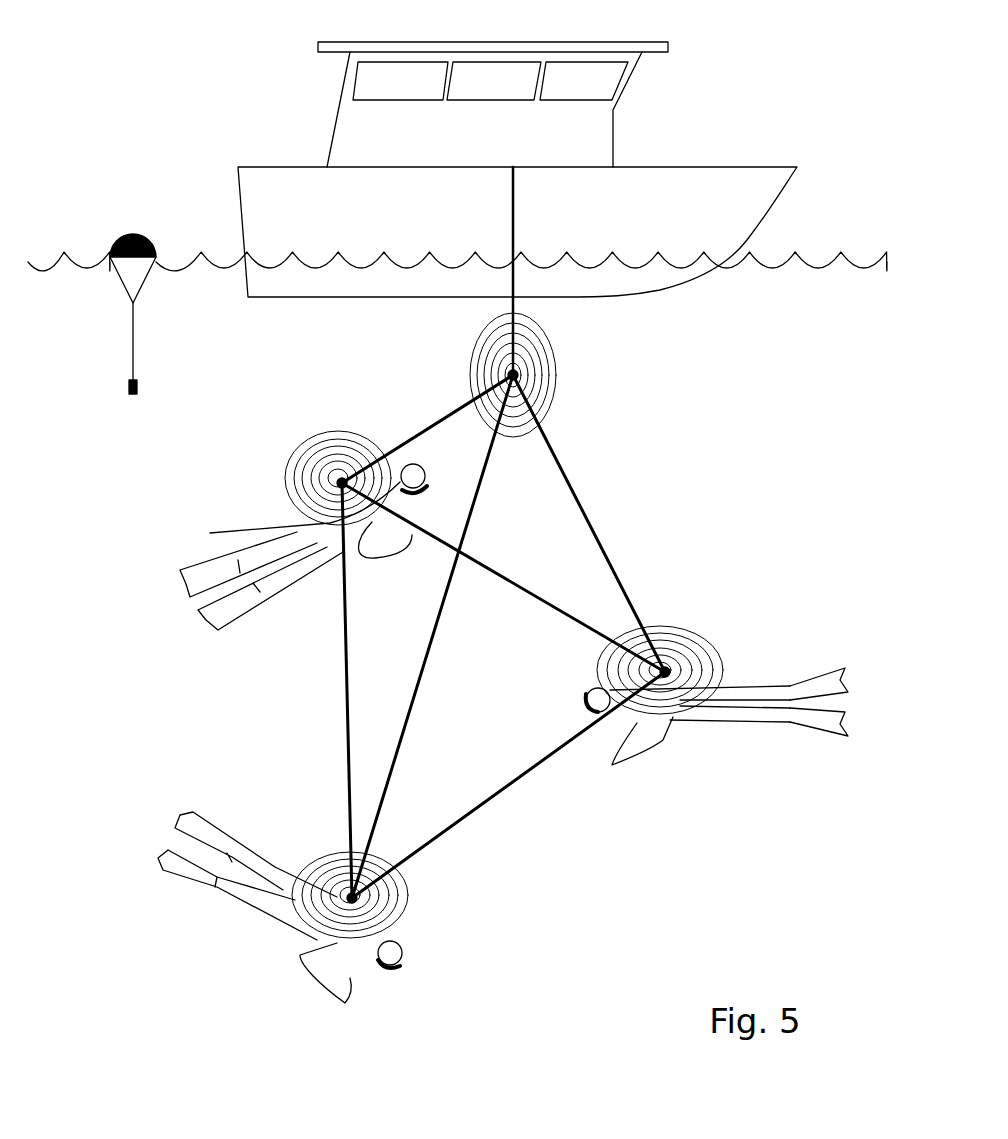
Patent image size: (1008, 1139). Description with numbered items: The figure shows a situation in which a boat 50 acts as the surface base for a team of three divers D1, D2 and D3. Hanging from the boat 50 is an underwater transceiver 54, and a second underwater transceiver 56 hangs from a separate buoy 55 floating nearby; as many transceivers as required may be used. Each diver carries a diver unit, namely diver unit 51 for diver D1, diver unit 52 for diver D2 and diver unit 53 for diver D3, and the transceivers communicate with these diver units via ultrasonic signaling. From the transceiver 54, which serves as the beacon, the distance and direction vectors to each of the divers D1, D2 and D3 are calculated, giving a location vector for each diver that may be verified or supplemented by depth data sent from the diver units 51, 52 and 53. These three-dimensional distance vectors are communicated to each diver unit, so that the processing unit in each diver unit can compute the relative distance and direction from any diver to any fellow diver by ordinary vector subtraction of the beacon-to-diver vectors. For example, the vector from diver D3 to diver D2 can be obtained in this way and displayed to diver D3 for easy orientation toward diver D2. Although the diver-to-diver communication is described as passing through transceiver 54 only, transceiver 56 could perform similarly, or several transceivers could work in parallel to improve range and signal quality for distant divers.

The boat 50 is at (667, 167).
The diver unit 51 is at (342, 483).
The diver unit 52 is at (672, 660).
The diver unit 53 is at (350, 895).
The underwater transceiver 54 is at (520, 375).
The buoy 55 is at (150, 238).
The underwater transceiver 56 is at (137, 390).
The diver D1 is at (210, 533).
The diver D2 is at (723, 712).
The diver D3 is at (280, 903).